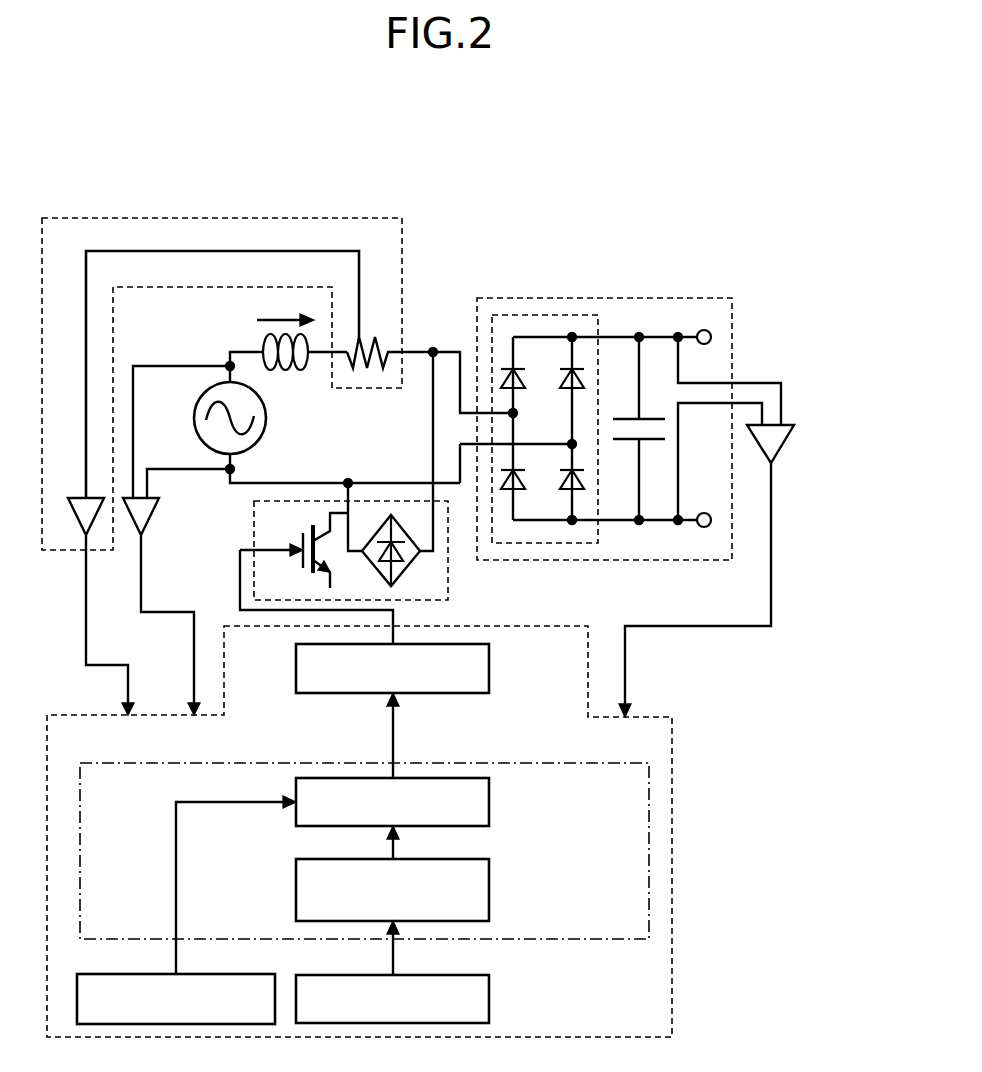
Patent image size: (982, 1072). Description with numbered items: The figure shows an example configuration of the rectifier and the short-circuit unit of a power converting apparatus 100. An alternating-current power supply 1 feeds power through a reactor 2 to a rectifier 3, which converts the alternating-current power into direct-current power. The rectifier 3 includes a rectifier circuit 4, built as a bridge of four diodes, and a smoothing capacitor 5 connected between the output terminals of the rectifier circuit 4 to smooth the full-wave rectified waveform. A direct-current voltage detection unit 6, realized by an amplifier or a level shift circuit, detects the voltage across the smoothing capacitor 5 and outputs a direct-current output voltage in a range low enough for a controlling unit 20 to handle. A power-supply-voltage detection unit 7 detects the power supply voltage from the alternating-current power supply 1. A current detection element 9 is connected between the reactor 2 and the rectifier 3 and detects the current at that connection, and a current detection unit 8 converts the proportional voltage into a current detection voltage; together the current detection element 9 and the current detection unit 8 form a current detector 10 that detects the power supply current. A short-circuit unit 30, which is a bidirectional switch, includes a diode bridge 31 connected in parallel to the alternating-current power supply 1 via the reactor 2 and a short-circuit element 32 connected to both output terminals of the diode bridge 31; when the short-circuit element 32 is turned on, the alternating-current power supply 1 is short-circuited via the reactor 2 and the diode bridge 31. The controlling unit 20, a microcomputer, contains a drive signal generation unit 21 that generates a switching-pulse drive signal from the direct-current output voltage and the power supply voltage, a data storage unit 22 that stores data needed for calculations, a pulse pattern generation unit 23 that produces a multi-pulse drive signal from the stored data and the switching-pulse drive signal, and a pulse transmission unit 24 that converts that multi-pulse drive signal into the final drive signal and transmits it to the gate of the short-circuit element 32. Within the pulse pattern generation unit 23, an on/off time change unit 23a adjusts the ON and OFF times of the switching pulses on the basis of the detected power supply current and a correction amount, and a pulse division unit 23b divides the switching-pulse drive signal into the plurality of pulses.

The power converting apparatus 100 is at (617, 132).
The alternating-current power supply 1 is at (266, 415).
The reactor 2 is at (262, 342).
The rectifier 3 is at (665, 298).
The rectifier circuit 4 is at (543, 315).
The smoothing capacitor 5 is at (628, 419).
The direct-current voltage detection unit 6 is at (789, 425).
The power-supply-voltage detection unit 7 is at (153, 512).
The current detection unit 8 is at (78, 498).
The current detection element 9 is at (378, 345).
The current detector 10 is at (355, 218).
The controlling unit 20 is at (674, 779).
The drive signal generation unit 21 is at (230, 974).
The data storage unit 22 is at (489, 1002).
The pulse pattern generation unit 23 is at (293, 763).
The on/off time change unit 23a is at (489, 893).
The pulse division unit 23b is at (489, 801).
The pulse transmission unit 24 is at (296, 671).
The short-circuit unit 30 is at (254, 517).
The diode bridge 31 is at (408, 572).
The short-circuit element 32 is at (303, 536).